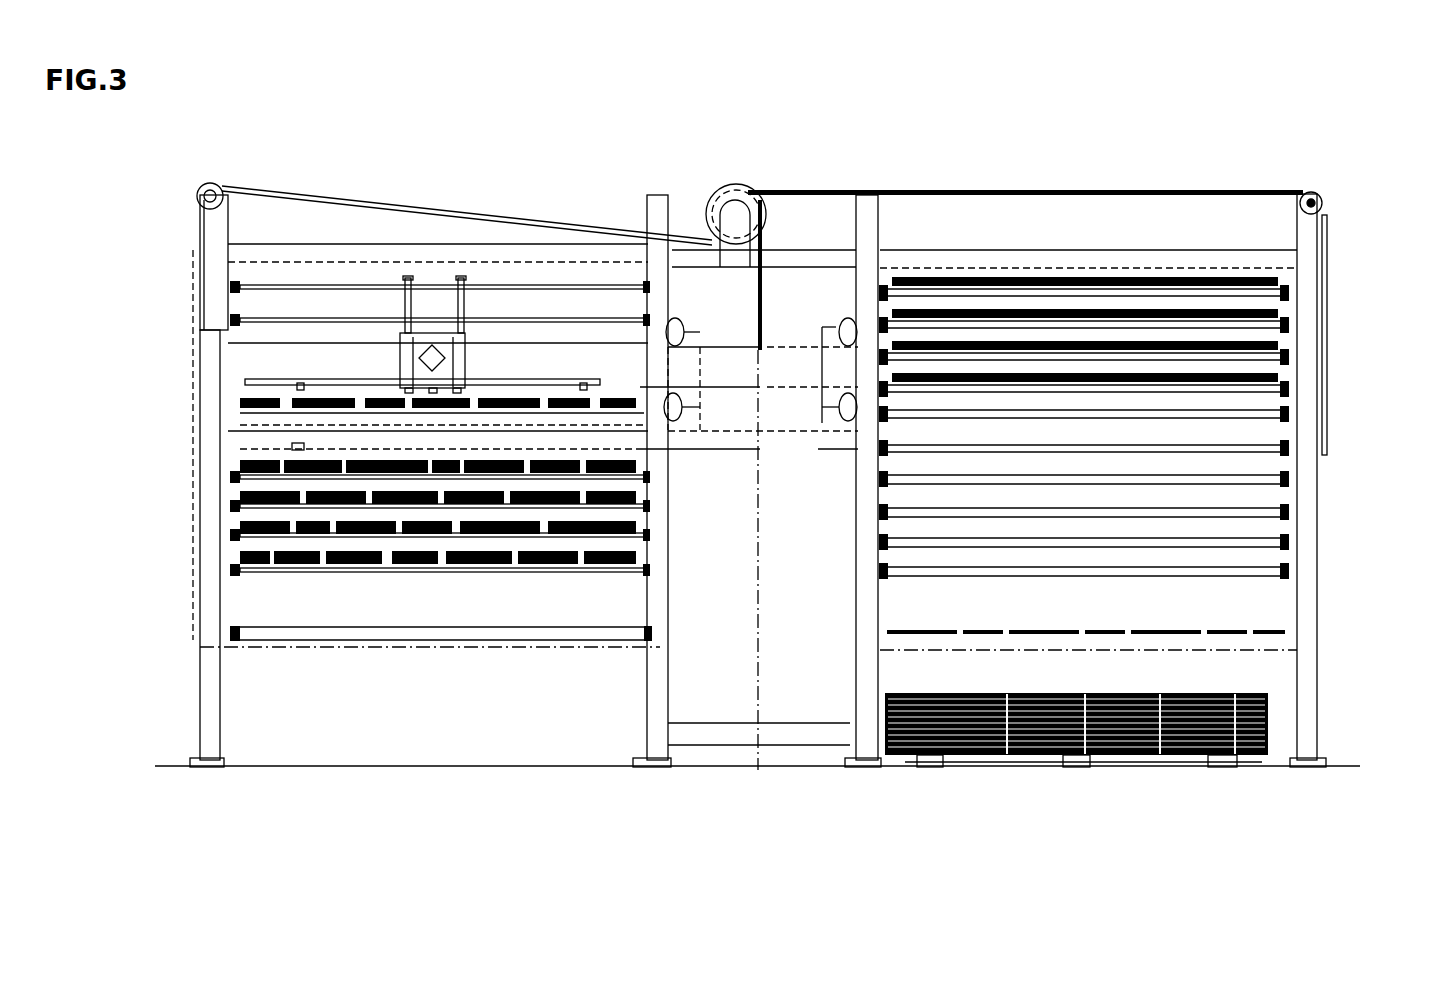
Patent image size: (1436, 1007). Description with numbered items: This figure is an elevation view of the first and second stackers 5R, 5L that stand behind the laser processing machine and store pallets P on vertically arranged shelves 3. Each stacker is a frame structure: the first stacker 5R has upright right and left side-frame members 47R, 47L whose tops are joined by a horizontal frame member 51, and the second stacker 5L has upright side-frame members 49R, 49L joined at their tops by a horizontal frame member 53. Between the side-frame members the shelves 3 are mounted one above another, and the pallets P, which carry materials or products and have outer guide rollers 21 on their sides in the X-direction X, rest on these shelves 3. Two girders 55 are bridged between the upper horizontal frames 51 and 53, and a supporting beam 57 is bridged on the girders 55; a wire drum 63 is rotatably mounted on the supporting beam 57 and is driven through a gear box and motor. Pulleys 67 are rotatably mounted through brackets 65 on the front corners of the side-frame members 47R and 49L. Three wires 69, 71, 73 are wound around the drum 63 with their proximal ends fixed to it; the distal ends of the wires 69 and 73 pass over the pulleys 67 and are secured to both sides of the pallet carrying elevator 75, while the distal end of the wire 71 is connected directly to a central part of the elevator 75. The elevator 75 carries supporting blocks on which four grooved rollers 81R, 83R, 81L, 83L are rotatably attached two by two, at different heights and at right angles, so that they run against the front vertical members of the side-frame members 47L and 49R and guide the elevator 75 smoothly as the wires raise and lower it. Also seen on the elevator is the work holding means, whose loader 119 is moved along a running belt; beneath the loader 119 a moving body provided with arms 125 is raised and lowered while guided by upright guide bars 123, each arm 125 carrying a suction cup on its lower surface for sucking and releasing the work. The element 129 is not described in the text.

The shelf 3 is at (215, 326).
The second stacker 5L is at (520, 188).
The first stacker 5R is at (1094, 180).
The guide roller 21 is at (880, 294).
The left side-frame member 47L is at (880, 232).
The right side-frame member 47R is at (1312, 252).
The left side-frame member 49L is at (200, 268).
The right side-frame member 49R is at (670, 292).
The horizontal frame member 51 is at (1088, 252).
The horizontal frame member 53 is at (282, 250).
The girder 55 is at (800, 256).
The supporting beam 57 is at (717, 240).
The wire drum 63 is at (726, 190).
The bracket 65 is at (212, 184).
The pulley 67 is at (222, 190).
The wire 69 is at (1182, 190).
The wire 71 is at (763, 277).
The wire 73 is at (428, 205).
The pallet carrying elevator 75 is at (766, 455).
The grooved roller 81L is at (688, 330).
The grooved roller 81R is at (838, 334).
The grooved roller 83L is at (690, 407).
The grooved roller 83R is at (830, 407).
The loader 119 is at (400, 346).
The guide bar 123 is at (406, 300).
The arm 125 is at (380, 380).
The arm end hook 129 is at (298, 388).
The pallet P is at (540, 292).
The X-direction X is at (791, 860).